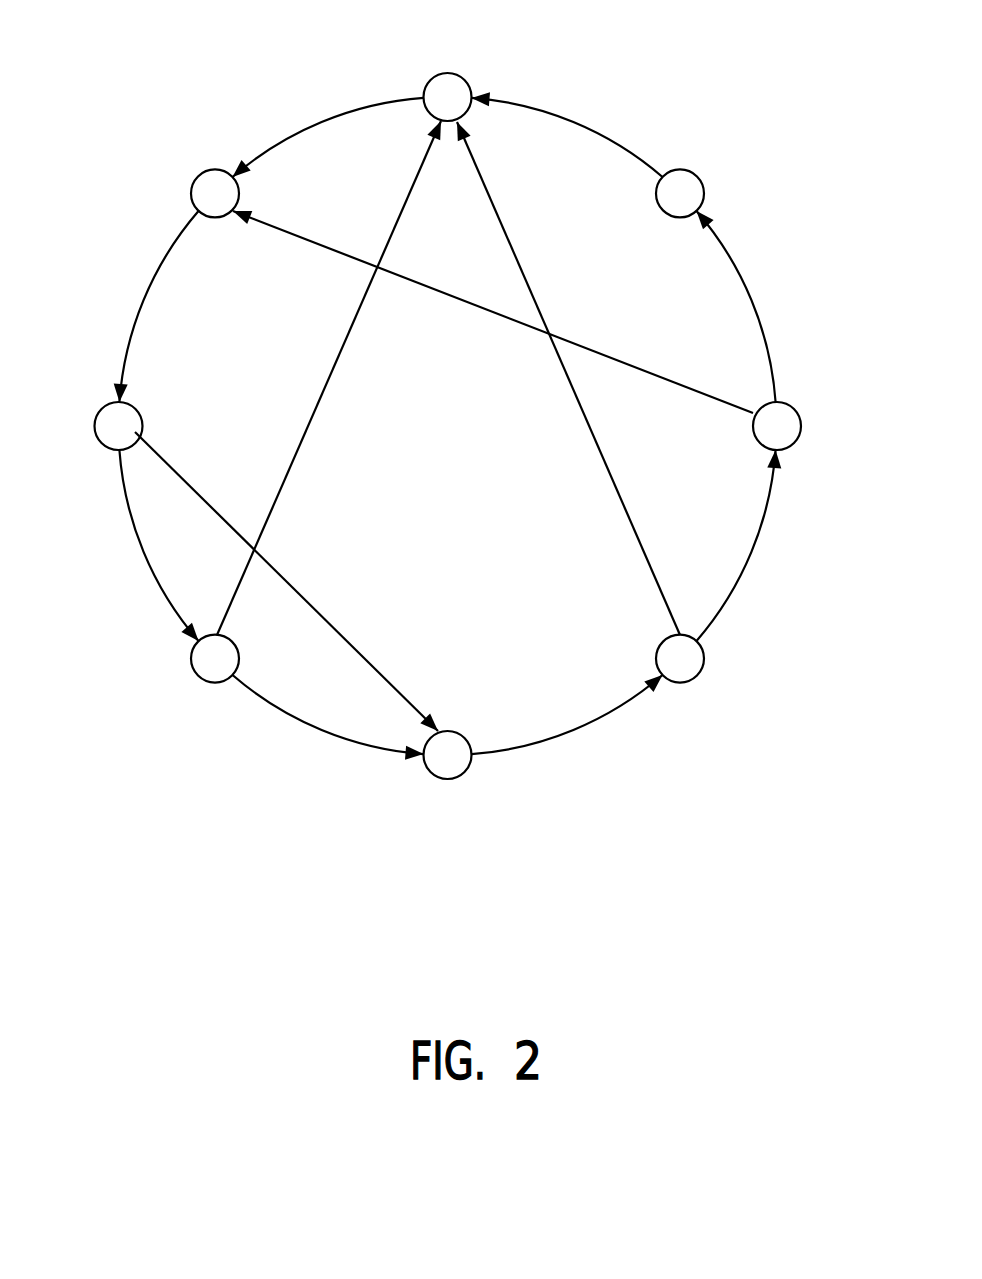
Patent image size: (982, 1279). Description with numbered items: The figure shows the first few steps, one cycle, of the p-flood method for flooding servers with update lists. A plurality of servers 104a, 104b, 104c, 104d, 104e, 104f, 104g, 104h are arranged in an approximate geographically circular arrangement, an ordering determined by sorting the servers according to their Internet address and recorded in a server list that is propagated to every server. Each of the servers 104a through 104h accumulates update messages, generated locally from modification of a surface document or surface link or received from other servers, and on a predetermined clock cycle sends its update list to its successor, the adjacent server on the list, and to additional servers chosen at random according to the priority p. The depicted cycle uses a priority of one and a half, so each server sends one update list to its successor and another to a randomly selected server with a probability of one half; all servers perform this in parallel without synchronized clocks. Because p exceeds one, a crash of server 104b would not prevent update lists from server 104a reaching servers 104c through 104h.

The server 104a is at (802, 425).
The server 104b is at (700, 175).
The server 104c is at (462, 78).
The server 104d is at (202, 171).
The server 104e is at (102, 407).
The server 104f is at (191, 670).
The server 104g is at (448, 780).
The server 104h is at (690, 683).